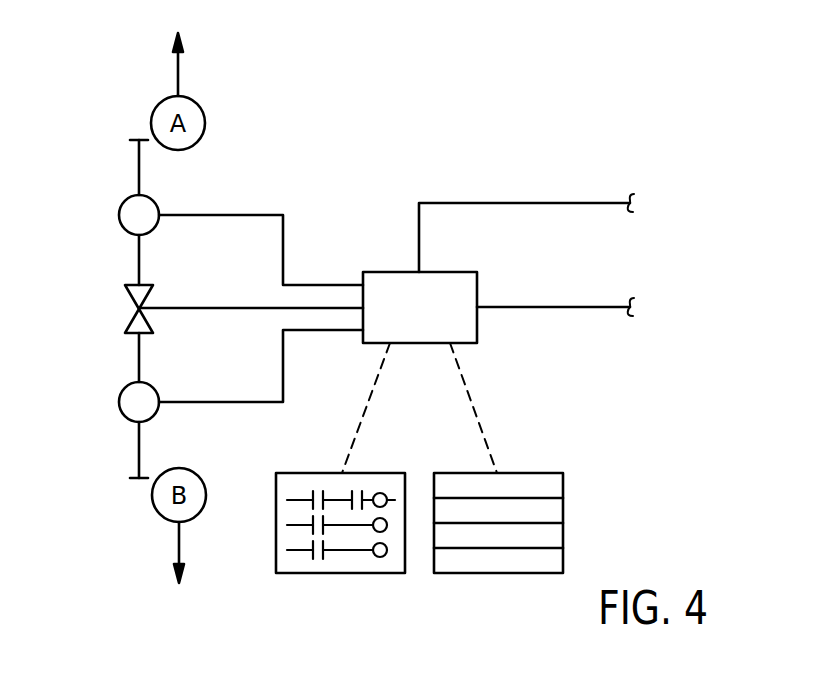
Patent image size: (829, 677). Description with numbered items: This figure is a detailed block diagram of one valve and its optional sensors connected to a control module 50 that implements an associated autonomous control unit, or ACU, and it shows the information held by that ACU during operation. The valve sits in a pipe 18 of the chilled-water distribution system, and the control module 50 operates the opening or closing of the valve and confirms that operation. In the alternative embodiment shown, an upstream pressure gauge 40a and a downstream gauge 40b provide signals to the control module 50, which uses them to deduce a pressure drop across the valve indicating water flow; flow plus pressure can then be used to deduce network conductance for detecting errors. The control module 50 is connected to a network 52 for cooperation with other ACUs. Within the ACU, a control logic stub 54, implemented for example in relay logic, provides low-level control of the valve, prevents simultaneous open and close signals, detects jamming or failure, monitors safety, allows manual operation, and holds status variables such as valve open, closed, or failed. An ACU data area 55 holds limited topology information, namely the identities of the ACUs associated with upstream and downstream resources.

The fluid conduit 18 is at (137, 167).
The upstream pressure gauge 40a is at (118, 217).
The downstream gauge 40b is at (118, 398).
The control module 50 is at (452, 271).
The network 52 is at (552, 308).
The control logic stub 54 is at (275, 527).
The ACU data area 55 is at (563, 507).